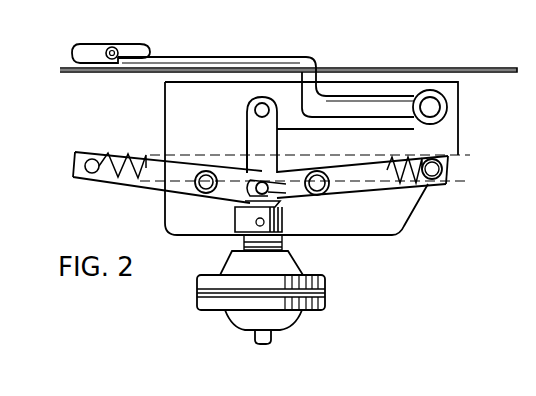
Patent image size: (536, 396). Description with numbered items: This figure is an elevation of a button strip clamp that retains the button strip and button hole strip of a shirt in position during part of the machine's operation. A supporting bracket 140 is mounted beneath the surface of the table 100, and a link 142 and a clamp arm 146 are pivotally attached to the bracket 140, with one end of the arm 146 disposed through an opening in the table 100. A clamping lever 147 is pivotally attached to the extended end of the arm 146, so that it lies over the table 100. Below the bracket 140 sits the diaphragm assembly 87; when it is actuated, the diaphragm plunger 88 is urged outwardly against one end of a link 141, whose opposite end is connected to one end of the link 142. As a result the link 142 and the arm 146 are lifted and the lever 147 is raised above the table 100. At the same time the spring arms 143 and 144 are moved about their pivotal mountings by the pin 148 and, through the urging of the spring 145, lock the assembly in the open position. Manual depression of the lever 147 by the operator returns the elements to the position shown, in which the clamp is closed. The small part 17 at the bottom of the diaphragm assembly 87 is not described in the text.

The table 100 is at (398, 67).
The clamp arm 146 is at (272, 58).
The clamping lever 147 is at (118, 44).
The supporting bracket 140 is at (402, 222).
The link 141 is at (247, 137).
The link 142 is at (292, 128).
The spring arm 143 is at (146, 188).
The spring arm 144 is at (350, 191).
The spring 145 is at (418, 156).
The pin 148 is at (287, 195).
The diaphragm plunger 88 is at (240, 204).
The diaphragm assembly 87 is at (331, 291).
The pin 17 is at (272, 338).